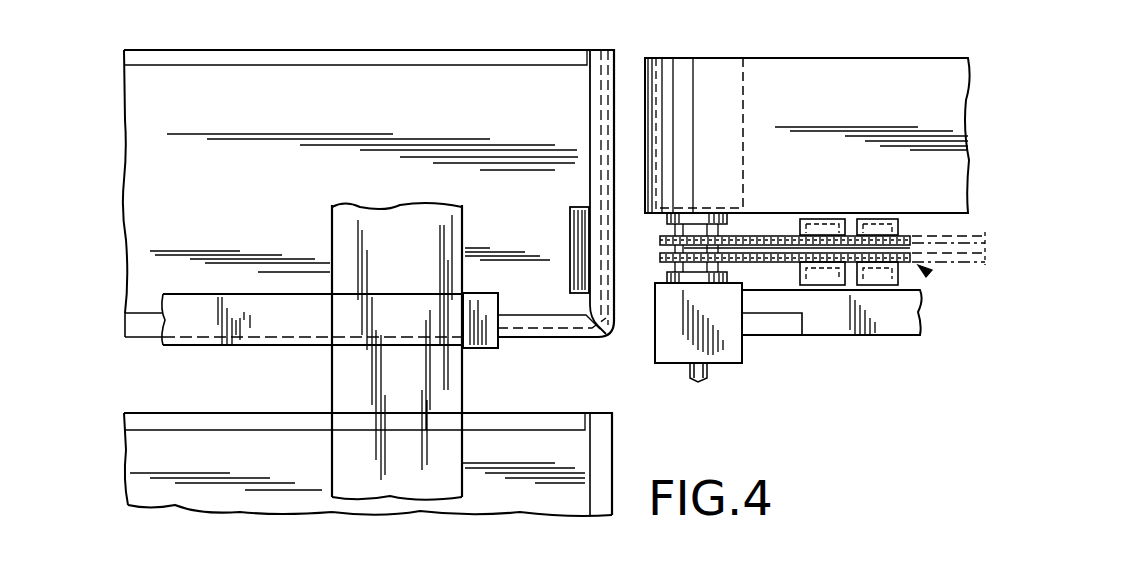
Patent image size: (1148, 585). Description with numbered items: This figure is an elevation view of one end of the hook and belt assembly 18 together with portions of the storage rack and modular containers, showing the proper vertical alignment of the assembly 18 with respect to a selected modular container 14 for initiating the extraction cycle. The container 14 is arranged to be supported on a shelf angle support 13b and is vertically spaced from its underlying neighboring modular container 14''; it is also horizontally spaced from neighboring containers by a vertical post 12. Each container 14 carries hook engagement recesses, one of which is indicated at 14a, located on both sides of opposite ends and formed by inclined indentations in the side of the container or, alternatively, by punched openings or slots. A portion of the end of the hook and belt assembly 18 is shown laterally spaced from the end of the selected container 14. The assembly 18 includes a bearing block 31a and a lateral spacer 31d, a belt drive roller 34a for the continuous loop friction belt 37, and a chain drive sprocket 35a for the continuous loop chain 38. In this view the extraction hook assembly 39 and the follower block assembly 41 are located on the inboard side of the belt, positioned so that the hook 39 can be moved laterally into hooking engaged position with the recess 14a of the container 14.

The modular container 14 is at (368, 174).
The hook engagement recess 14a is at (575, 222).
The neighboring modular container 14'' is at (368, 444).
The shelf angle support 13b is at (282, 329).
The vertical post 12 is at (332, 370).
The continuous loop friction belt 37 is at (855, 70).
The belt drive roller 34a is at (743, 92).
The chain drive sprocket 35a is at (658, 228).
The continuous loop chain 38 is at (772, 262).
The follower block assembly 41 is at (900, 226).
The first extraction hook 39 is at (828, 286).
The lateral spacer 31d is at (900, 325).
The bearing block 31a is at (728, 352).
The hook and belt assembly 18 is at (925, 272).